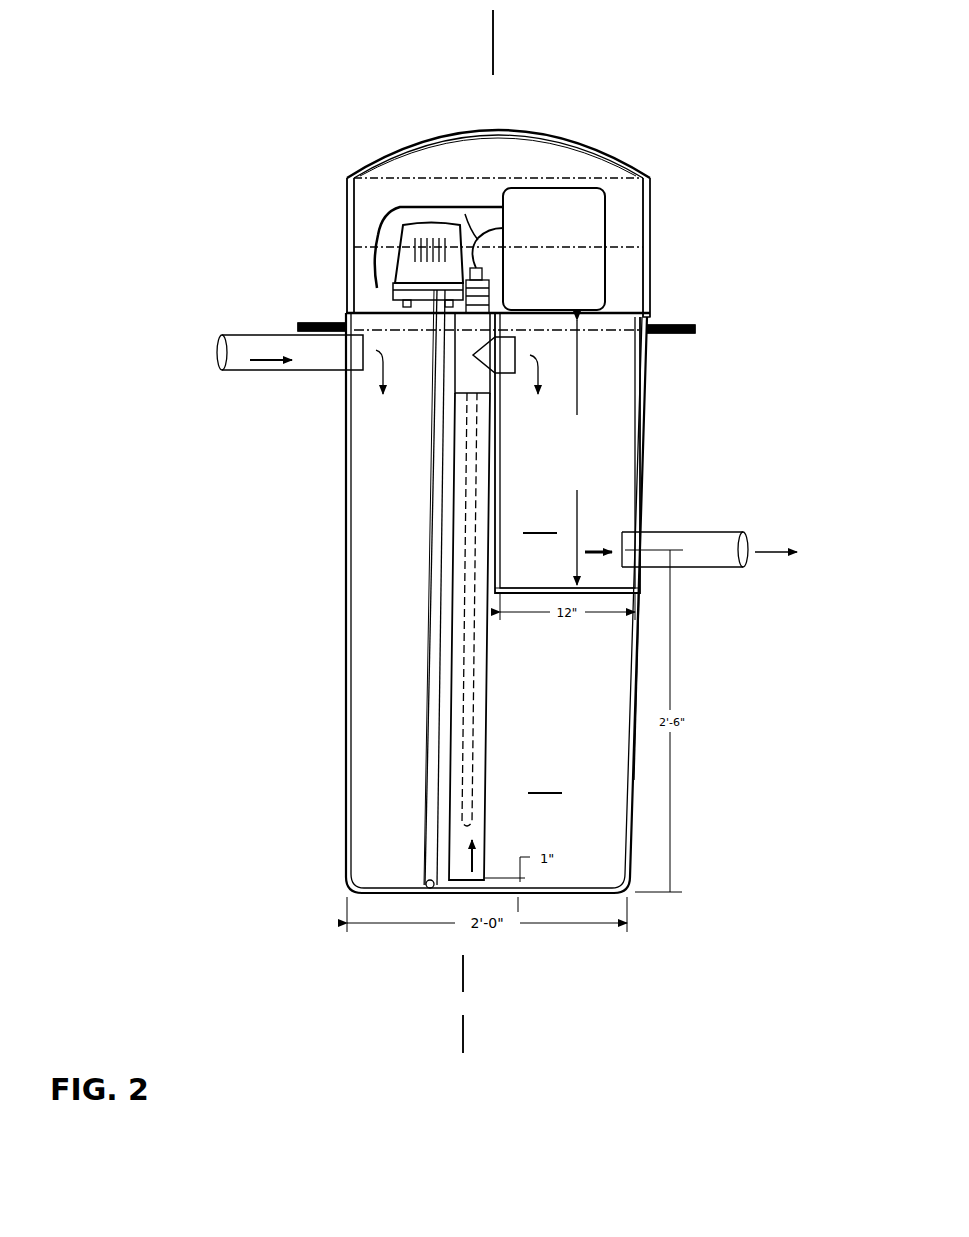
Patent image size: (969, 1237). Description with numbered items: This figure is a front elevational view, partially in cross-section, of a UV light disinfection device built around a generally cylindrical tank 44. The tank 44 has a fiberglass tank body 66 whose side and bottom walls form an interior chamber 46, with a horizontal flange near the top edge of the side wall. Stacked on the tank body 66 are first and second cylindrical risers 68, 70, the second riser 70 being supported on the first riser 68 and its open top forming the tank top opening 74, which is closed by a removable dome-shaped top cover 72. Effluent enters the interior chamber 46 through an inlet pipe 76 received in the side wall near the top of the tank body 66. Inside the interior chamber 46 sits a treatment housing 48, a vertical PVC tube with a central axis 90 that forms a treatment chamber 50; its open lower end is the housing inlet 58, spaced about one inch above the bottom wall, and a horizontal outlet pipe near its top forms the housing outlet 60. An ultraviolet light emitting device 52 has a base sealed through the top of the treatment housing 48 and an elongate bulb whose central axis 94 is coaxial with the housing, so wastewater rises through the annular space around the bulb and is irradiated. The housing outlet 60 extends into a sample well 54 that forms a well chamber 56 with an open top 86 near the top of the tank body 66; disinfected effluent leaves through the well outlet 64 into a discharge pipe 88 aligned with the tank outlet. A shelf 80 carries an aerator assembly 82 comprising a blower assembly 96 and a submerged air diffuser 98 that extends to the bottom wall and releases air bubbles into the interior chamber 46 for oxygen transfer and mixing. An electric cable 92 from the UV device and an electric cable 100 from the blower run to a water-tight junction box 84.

The tank 44 is at (345, 670).
The interior chamber 46 is at (547, 776).
The treatment housing 48 is at (452, 637).
The treatment chamber 50 is at (458, 880).
The ultraviolet light emitting device 52 is at (462, 540).
The sample well 54 is at (602, 596).
The well chamber 56 is at (567, 453).
The housing inlet 58 is at (452, 882).
The housing outlet 60 is at (518, 343).
The well outlet 64 is at (627, 540).
The tank body 66 is at (641, 802).
The first riser 68 is at (653, 290).
The second riser 70 is at (652, 237).
The top cover 72 is at (606, 152).
The tank top opening 74 is at (388, 177).
The inlet pipe 76 is at (266, 334).
The shelf 80 is at (372, 309).
The aerator assembly 82 is at (398, 248).
The junction box 84 is at (610, 221).
The open top 86 is at (615, 313).
The discharge pipe 88 is at (683, 532).
The central axis 90 is at (470, 998).
The electric cable 92 is at (472, 214).
The central axis 94 is at (478, 531).
The blower assembly 96 is at (386, 279).
The air diffuser 98 is at (424, 775).
The electric cable 100 is at (447, 206).